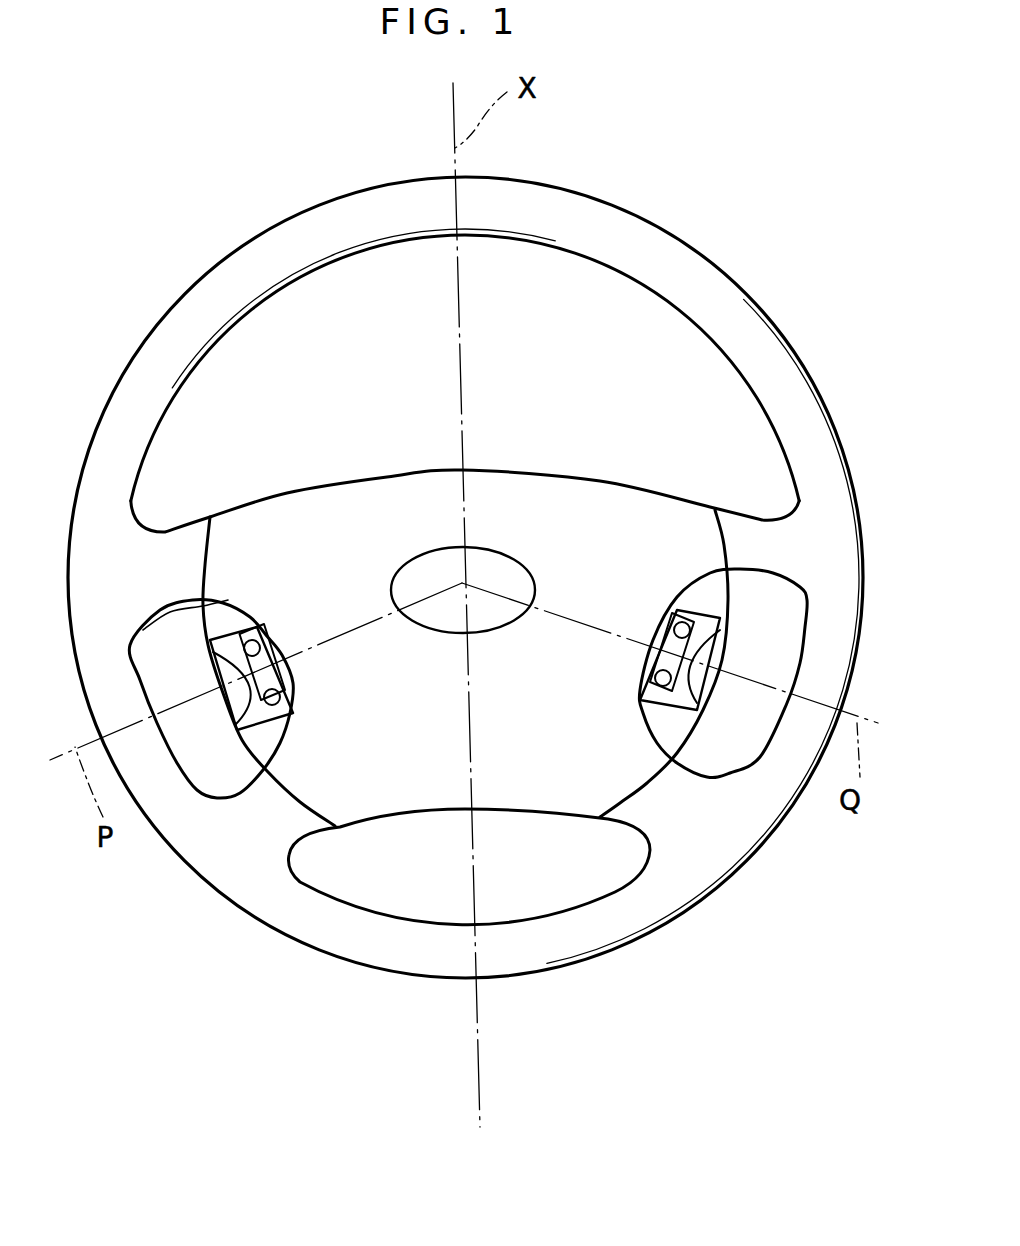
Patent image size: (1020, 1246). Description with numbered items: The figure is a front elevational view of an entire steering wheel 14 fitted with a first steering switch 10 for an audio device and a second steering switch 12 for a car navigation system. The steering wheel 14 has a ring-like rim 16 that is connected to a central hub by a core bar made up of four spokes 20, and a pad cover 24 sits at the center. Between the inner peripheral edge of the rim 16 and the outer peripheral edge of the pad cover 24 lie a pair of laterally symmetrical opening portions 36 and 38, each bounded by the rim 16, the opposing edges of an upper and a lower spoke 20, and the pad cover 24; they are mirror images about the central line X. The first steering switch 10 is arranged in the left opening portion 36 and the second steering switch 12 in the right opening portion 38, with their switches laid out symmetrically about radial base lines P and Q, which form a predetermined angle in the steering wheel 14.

The first steering switch 10 is at (221, 742).
The second steering switch 12 is at (729, 716).
The steering wheel 14 is at (585, 196).
The rim 16 is at (402, 953).
The spokes 20 is at (187, 550).
The pad cover 24 is at (485, 765).
The opening portion 36 is at (225, 601).
The opening portion 38 is at (805, 617).